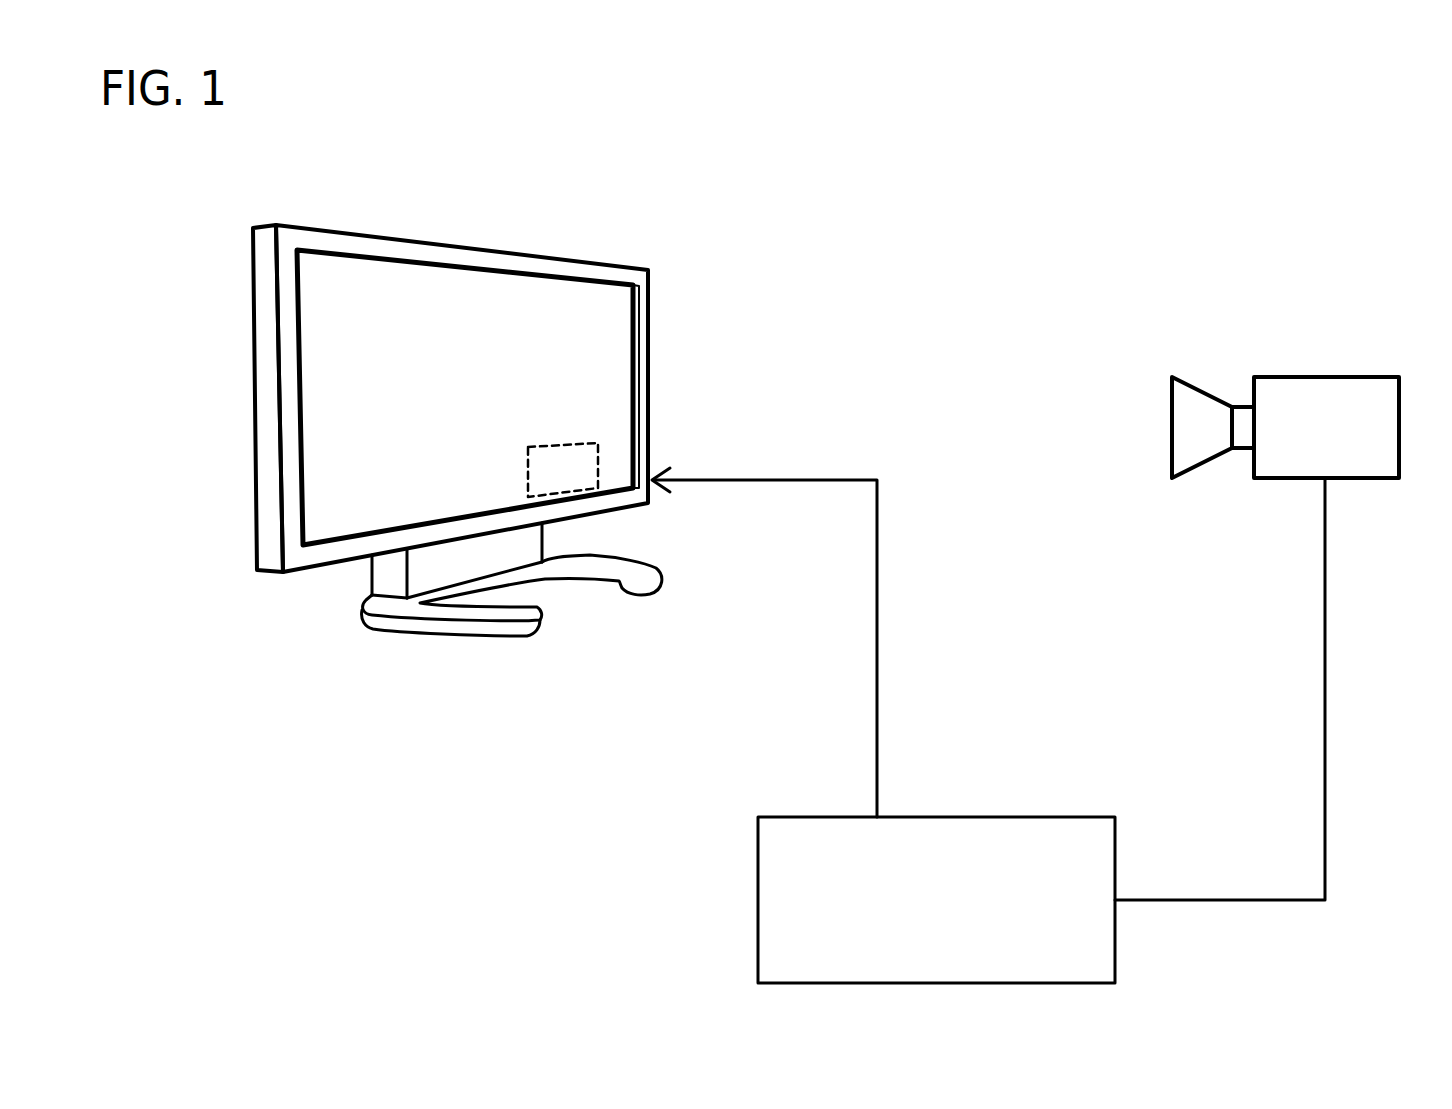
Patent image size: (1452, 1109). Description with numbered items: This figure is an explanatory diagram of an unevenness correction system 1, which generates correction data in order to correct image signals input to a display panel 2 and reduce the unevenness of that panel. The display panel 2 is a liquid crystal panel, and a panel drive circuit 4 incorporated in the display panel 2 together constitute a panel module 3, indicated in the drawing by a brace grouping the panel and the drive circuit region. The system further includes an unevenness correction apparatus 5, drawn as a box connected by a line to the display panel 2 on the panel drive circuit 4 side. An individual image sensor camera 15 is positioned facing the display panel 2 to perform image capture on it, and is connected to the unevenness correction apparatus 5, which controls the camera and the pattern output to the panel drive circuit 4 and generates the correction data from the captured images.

The unevenness correction system 1 is at (1027, 250).
The display panel 2 is at (577, 338).
The panel module 3 is at (803, 268).
The panel drive circuit 4 is at (582, 442).
The unevenness correction apparatus 5 is at (967, 818).
The image sensor camera 15 is at (1315, 377).